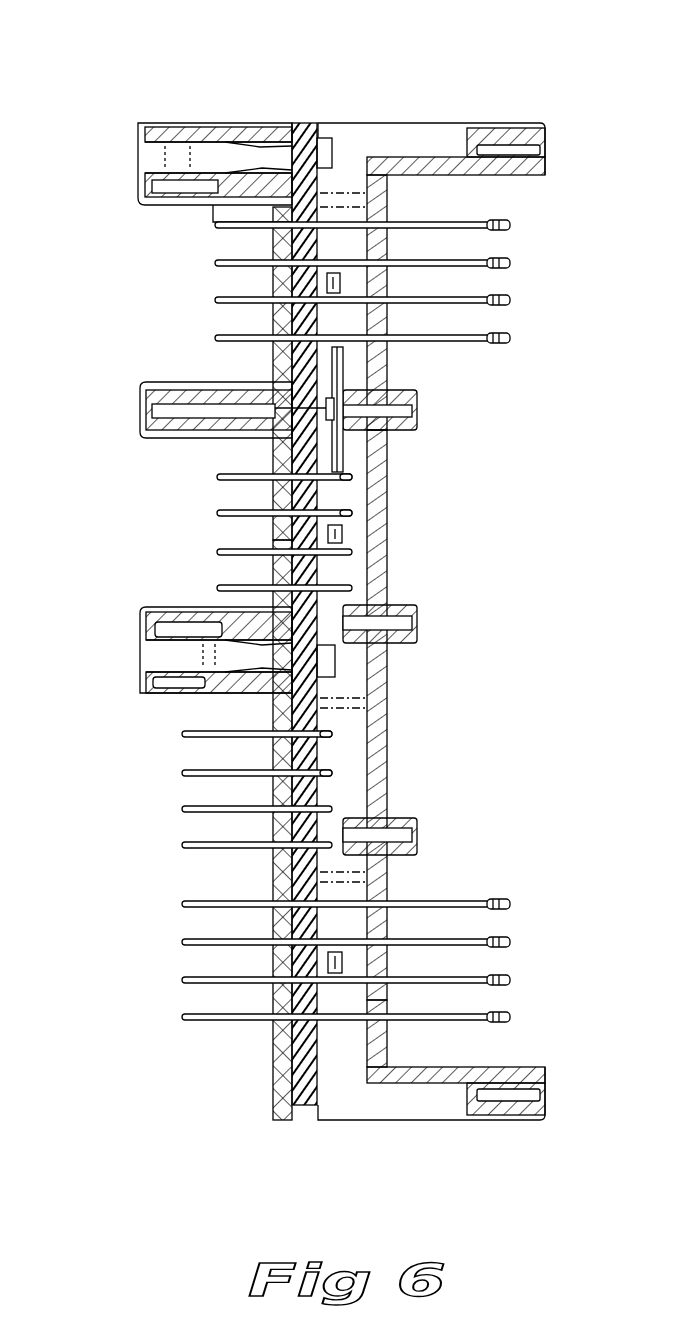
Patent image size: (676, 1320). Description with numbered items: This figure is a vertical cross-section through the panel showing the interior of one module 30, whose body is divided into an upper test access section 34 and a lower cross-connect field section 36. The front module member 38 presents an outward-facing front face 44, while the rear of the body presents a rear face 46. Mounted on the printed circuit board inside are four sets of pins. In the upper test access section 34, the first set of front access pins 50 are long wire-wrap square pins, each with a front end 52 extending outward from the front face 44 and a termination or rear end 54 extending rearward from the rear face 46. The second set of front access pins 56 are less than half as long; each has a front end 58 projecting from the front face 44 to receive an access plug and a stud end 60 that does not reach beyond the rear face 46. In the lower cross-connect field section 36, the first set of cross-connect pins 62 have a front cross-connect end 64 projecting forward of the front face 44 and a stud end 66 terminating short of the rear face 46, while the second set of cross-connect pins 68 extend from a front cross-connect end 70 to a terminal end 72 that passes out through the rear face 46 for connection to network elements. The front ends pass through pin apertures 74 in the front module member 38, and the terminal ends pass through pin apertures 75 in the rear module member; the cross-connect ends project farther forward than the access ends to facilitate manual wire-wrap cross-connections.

The module 30 is at (387, 118).
The upper test access section 34 is at (128, 320).
The lower cross-connect field section 36 is at (110, 905).
The front module member 38 is at (236, 130).
The front face 44 is at (275, 285).
The rear face 46 is at (385, 555).
The first set of front access pins 50 is at (438, 260).
The front end 52 is at (215, 255).
The termination or rear end 54 is at (513, 262).
The second set of front access pins 56 is at (217, 512).
The front end 58 is at (217, 587).
The stud end 60 is at (352, 512).
The first set of cross-connect pins 62 is at (182, 772).
The front cross-connect end 64 is at (182, 845).
The stud end 66 is at (332, 772).
The second set of cross-connect pins 68 is at (447, 940).
The front cross-connect end 70 is at (182, 1016).
The terminal end 72 is at (513, 940).
The pin apertures 74 is at (275, 548).
The pin apertures 75 is at (390, 198).